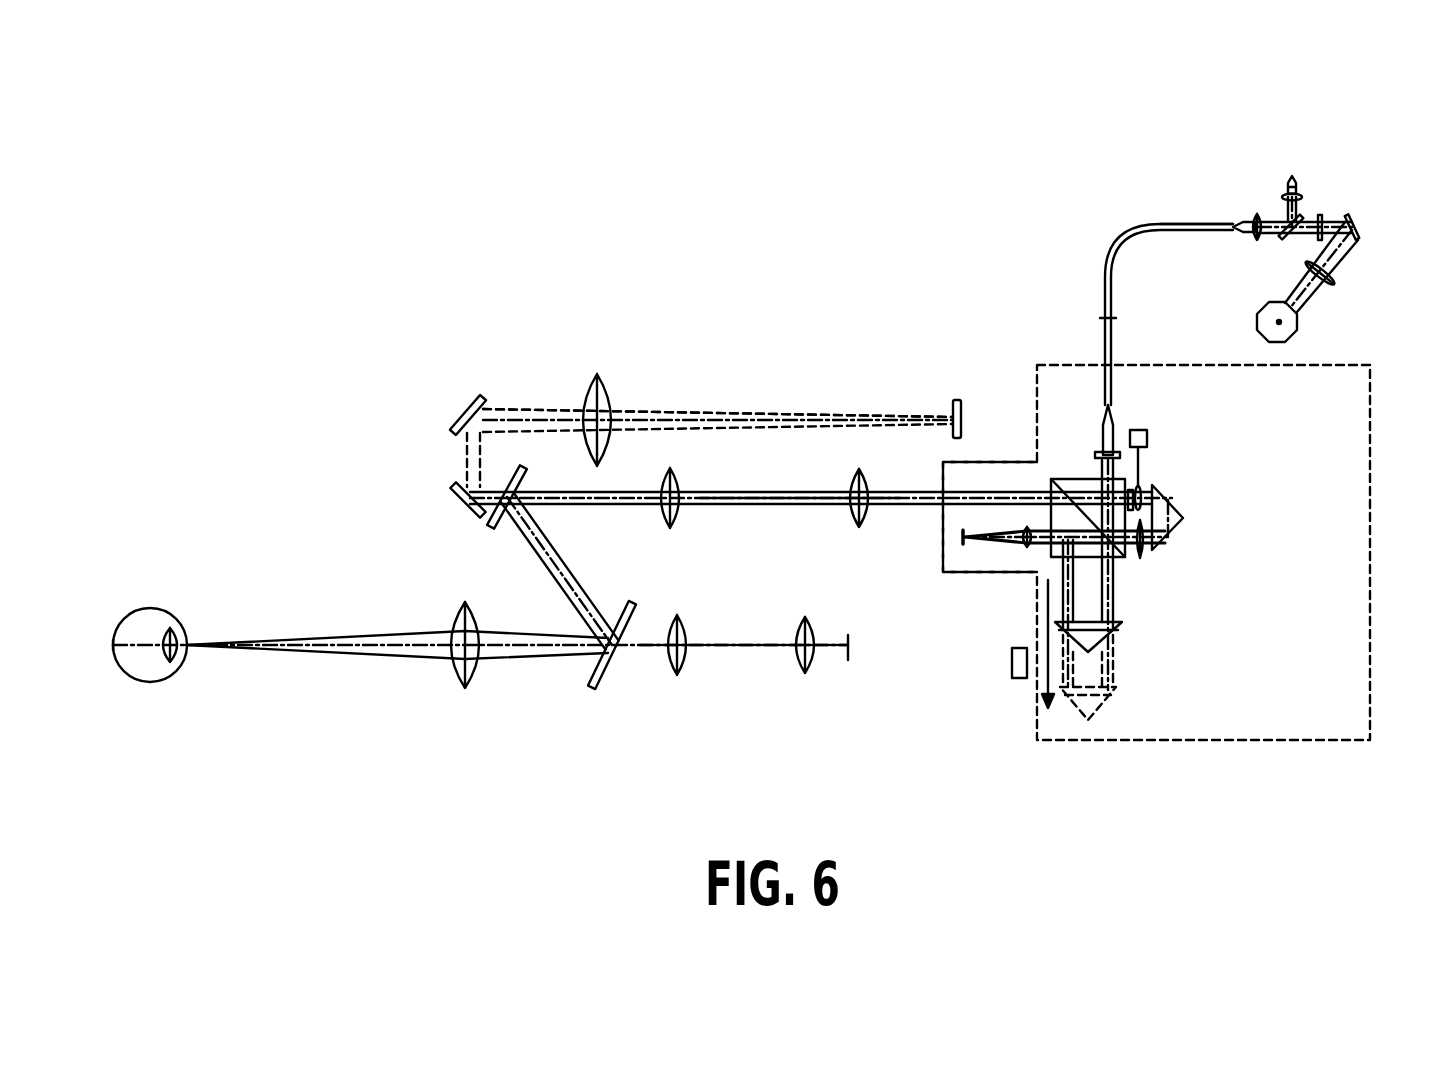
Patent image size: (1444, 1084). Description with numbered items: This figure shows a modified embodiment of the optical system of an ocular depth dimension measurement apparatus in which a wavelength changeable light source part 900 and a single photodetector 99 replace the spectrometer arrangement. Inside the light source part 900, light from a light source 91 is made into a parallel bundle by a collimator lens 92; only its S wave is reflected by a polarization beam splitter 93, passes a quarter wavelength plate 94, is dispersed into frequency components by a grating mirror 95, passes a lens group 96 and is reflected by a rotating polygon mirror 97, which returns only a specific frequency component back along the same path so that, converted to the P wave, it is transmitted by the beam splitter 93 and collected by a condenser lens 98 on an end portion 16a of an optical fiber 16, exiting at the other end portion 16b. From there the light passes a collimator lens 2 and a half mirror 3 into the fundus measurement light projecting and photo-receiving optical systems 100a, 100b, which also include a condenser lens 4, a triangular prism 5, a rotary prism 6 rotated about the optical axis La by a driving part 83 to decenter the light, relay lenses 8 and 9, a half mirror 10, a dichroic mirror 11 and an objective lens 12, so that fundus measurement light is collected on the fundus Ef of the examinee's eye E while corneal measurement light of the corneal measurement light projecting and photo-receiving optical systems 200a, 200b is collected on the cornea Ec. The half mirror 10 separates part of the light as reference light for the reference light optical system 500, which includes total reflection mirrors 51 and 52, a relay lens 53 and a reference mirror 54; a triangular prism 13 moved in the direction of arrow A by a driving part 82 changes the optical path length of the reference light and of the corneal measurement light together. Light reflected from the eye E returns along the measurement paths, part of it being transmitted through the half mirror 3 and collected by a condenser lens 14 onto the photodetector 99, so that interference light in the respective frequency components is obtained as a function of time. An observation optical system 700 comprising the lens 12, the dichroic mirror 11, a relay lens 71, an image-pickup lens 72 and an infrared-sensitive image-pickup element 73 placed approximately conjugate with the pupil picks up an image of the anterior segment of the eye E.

The examinee's eye E is at (150, 608).
The fundus Ef is at (113, 655).
The cornea Ec is at (185, 652).
The collimator lens 2 is at (1094, 455).
The half mirror 3 is at (1053, 478).
The condenser lens 4 is at (1140, 560).
The triangular prism 5 is at (1176, 538).
The rotary prism 6 is at (1141, 486).
The relay lens 8 is at (855, 518).
The relay lens 9 is at (663, 516).
The half mirror 10 is at (497, 516).
The dichroic mirror 11 is at (600, 682).
The objective lens 12 is at (452, 667).
The triangular prism 13 is at (1120, 632).
The condenser lens 14 is at (1025, 550).
The optical fiber 16 is at (1116, 320).
The end portion of optical fiber 16a is at (1228, 225).
The end portion of optical fiber 16b is at (1116, 392).
The total reflection mirror 51 is at (455, 500).
The total reflection mirror 52 is at (455, 412).
The relay lens 53 is at (593, 402).
The reference mirror 54 is at (956, 398).
The relay lens 71 is at (684, 618).
The image-pickup lens 72 is at (798, 621).
The image-pickup element 73 is at (848, 633).
The driving part 82 is at (1018, 678).
The driving part 83 is at (1148, 437).
The light source 91 is at (1293, 174).
The collimator lens 92 is at (1281, 199).
The polarization beam splitter 93 is at (1290, 242).
The ¼ wavelength plate 94 is at (1321, 213).
The grating mirror 95 is at (1358, 230).
The lens group 96 is at (1334, 283).
The polygon mirror 97 is at (1257, 322).
The condenser lens 98 is at (1252, 242).
The photodetector 99 is at (965, 546).
The probe units 100a, 100b is at (1168, 566).
The light source units 200a, 200b is at (996, 620).
The reference light optical system 500 is at (716, 390).
The observation optical system 700 is at (716, 668).
The wavelength changeable light source part 900 is at (1190, 170).
The optical axis La is at (838, 492).
The arrow A is at (1046, 643).